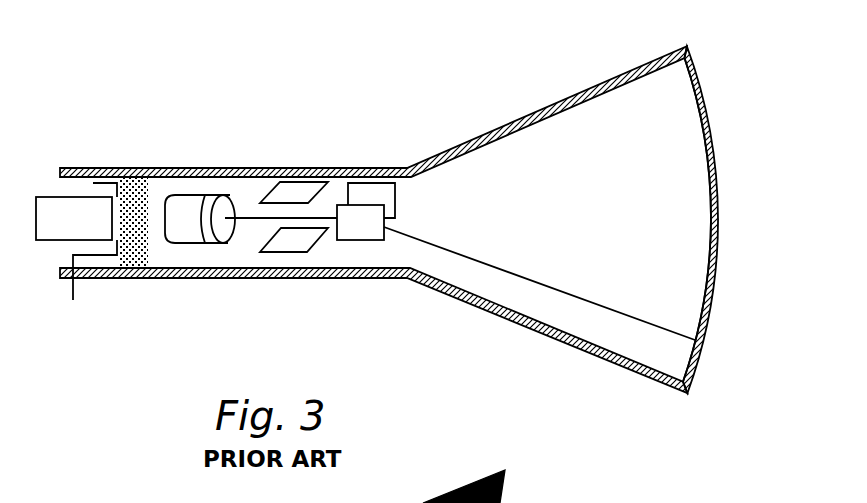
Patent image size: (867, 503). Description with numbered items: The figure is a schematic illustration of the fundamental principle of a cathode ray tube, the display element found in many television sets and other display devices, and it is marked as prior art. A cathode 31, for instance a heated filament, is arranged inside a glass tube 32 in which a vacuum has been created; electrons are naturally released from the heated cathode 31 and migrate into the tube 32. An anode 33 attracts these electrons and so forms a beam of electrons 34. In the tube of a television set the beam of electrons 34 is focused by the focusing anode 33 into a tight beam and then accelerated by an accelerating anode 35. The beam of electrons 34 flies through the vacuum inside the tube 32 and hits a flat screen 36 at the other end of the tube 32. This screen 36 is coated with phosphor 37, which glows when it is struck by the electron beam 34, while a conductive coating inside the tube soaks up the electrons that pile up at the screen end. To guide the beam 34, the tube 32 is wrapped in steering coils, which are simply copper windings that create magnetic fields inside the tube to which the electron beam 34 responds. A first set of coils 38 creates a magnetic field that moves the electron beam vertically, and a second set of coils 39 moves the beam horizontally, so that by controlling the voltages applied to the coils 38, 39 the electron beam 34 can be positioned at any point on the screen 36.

The cathode 31 is at (73, 293).
The glass tube 32 is at (532, 114).
The anode 33 is at (223, 177).
The beam of electrons 34 is at (643, 321).
The accelerating anode 35 is at (230, 223).
The flat screen 36 is at (719, 219).
The phosphor 37 is at (710, 203).
The first set of coils 38 is at (302, 190).
The second set of coils 39 is at (362, 248).